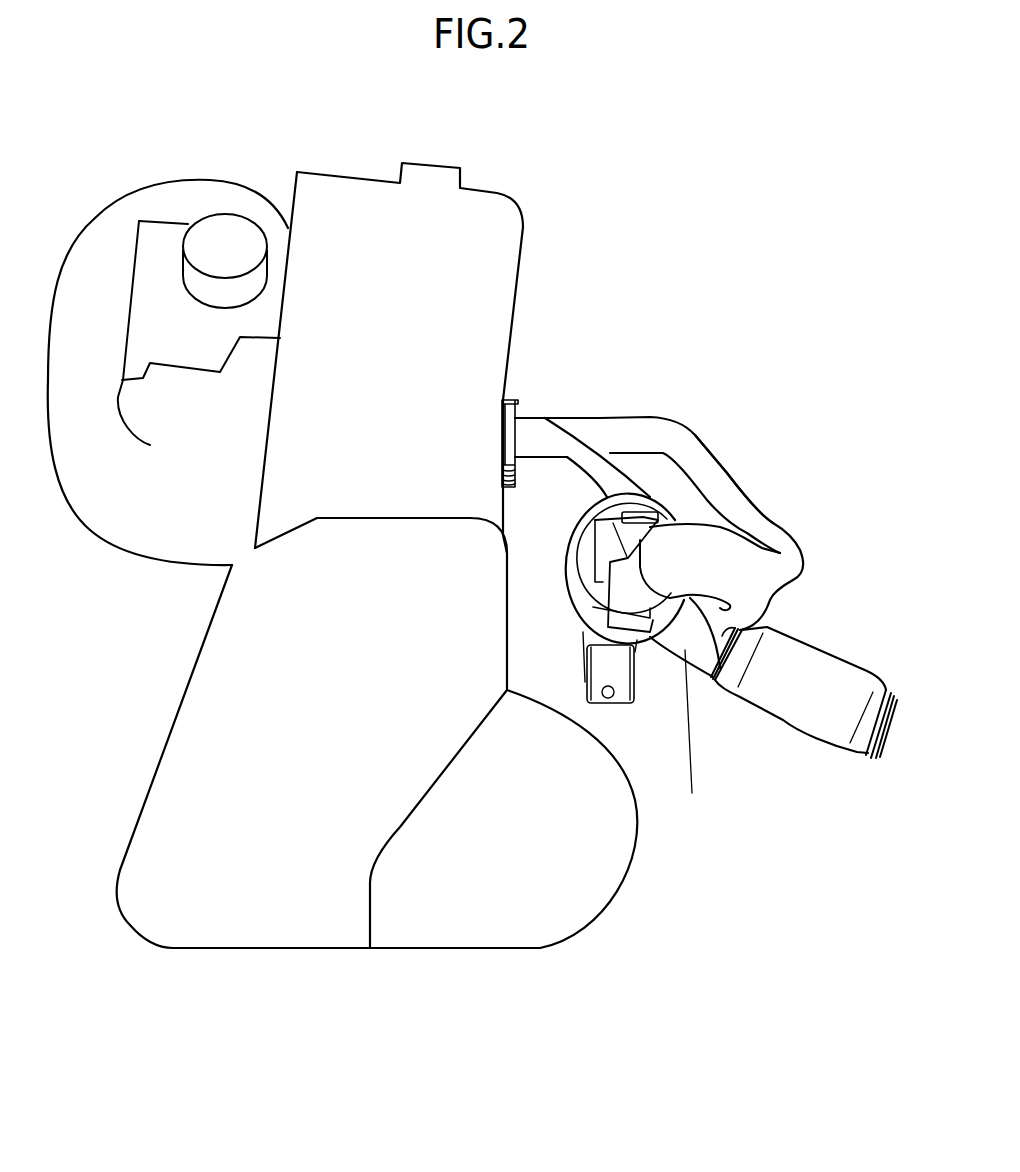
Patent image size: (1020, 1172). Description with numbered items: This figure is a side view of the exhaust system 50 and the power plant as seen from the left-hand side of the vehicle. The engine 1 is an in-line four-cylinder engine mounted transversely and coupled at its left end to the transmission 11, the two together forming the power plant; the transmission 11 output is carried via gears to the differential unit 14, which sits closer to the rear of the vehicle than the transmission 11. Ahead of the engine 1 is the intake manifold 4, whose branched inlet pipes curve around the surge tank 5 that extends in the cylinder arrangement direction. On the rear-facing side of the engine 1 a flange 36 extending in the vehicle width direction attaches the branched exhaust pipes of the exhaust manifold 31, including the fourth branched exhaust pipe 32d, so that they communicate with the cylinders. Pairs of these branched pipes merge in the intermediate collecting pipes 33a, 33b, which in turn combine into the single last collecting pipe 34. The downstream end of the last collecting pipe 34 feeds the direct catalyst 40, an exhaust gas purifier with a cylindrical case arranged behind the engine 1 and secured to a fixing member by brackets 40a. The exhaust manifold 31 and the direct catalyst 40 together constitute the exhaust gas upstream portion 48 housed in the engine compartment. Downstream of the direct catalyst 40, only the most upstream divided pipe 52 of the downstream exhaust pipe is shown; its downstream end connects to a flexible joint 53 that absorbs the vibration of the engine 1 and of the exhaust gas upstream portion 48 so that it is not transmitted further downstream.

The engine 1 is at (346, 158).
The intake manifold 4 is at (202, 178).
The surge tank 5 is at (150, 248).
The transmission 11 is at (276, 948).
The differential unit 14 is at (479, 950).
The exhaust manifold 31 is at (699, 412).
The fourth branched exhaust pipe 32d is at (557, 443).
The intermediate collecting pipe 33a is at (703, 618).
The intermediate collecting pipe 33b is at (737, 497).
The last collecting pipe 34 is at (690, 558).
The flange 36 is at (518, 406).
The direct catalyst 40 is at (556, 564).
The bracket 40a is at (619, 703).
The exhaust gas upstream portion 48 is at (784, 500).
The exhaust system 50 is at (787, 748).
The most upstream divided pipe 52 is at (691, 756).
The flexible joint 53 is at (823, 720).